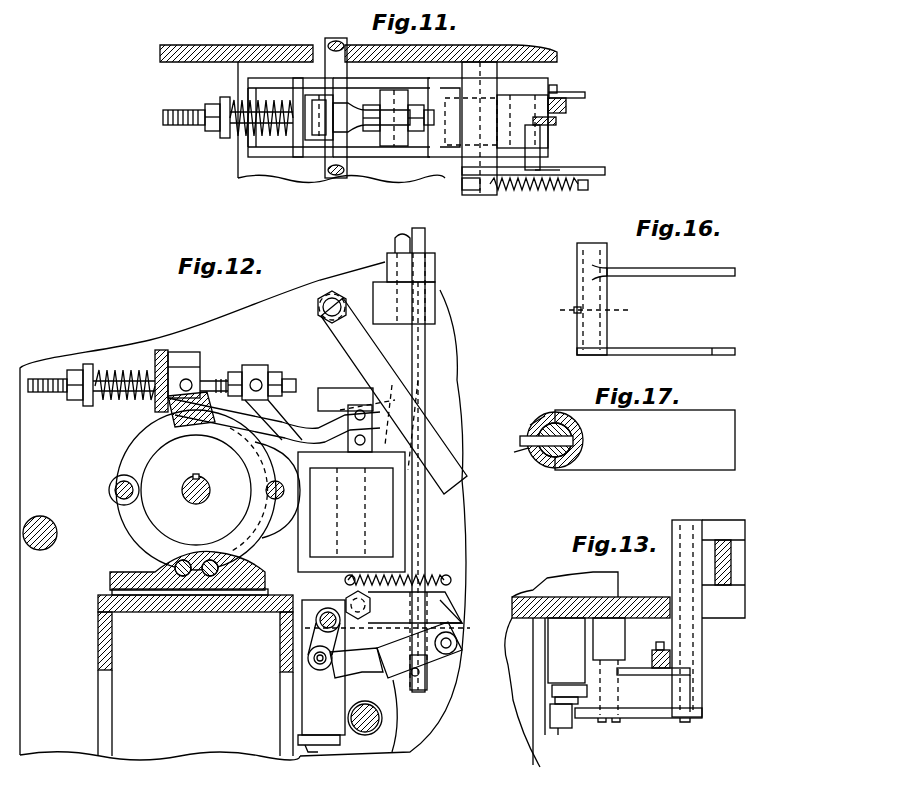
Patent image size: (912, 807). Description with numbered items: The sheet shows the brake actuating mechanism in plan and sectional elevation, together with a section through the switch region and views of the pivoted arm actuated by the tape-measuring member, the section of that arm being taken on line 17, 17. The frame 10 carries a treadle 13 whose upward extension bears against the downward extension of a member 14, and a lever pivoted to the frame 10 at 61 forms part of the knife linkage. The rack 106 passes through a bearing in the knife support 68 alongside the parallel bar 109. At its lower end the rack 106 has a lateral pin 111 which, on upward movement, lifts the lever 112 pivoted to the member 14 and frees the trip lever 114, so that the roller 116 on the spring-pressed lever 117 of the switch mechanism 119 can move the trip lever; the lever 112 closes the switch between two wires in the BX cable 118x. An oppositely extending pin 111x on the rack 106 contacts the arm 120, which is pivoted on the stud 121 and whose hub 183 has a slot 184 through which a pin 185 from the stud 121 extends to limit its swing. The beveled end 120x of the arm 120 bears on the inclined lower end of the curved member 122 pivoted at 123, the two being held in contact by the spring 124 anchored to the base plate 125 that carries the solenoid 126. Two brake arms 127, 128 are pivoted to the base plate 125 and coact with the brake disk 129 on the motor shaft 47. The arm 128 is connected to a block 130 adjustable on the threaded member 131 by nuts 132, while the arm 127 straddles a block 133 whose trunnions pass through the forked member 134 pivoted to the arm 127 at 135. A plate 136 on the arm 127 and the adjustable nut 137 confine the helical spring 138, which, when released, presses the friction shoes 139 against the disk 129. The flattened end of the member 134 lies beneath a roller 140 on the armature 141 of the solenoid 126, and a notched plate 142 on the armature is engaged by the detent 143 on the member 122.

In FIG. 12, the frame 10 is at (98, 656).
In FIG. 13, the frame 10 is at (620, 598).
In FIG. 12, the treadle 13 is at (462, 628).
In FIG. 12, the member 14 is at (462, 655).
In FIG. 13, the member 14 is at (745, 560).
In FIG. 16, the section line 17 is at (594, 311).
In FIG. 11, the shaft of electric motor 47 is at (330, 44).
In FIG. 12, the shaft of electric motor 47 is at (200, 502).
In FIG. 12, the pivot of lever 60 61 is at (40, 550).
In FIG. 12, the knife support 68 is at (436, 270).
In FIG. 11, the rack 106 is at (575, 101).
In FIG. 12, the rack 106 is at (426, 236).
In FIG. 13, the rack 106 is at (672, 660).
In FIG. 11, the parallel bar 109 is at (557, 121).
In FIG. 12, the parallel bar 109 is at (395, 246).
In FIG. 12, the lateral pin 111 is at (430, 672).
In FIG. 13, the lateral pin 111 is at (655, 676).
In FIG. 11, the oppositely extending lateral pin 111x is at (557, 88).
In FIG. 13, the oppositely extending lateral pin 111x is at (664, 644).
In FIG. 12, the lever 112 is at (410, 752).
In FIG. 13, the lever 112 is at (690, 718).
In FIG. 12, the trip lever 114 is at (353, 712).
In FIG. 13, the trip lever 114 is at (588, 722).
In FIG. 12, the roller 116 is at (312, 668).
In FIG. 13, the roller 116 is at (558, 736).
In FIG. 12, the spring-pressed lever 117 is at (310, 645).
In FIG. 13, the spring-pressed lever 117 is at (548, 698).
In FIG. 12, the BX cable 118x is at (312, 752).
In FIG. 12, the switch mechanism 119 is at (302, 722).
In FIG. 13, the switch mechanism 119 is at (545, 668).
In FIG. 12, the arm 120 is at (380, 616).
In FIG. 16, the arm 120 is at (654, 348).
In FIG. 17, the arm 120 is at (664, 470).
In FIG. 11, the beveled end 120x is at (560, 168).
In FIG. 16, the beveled end 120x is at (726, 348).
In FIG. 17, the pivot stud 121 is at (550, 413).
In FIG. 11, the curved member 122 is at (606, 170).
In FIG. 12, the curved member 122 is at (468, 482).
In FIG. 11, the pivot of curved member 123 is at (476, 190).
In FIG. 12, the pivot of curved member 123 is at (330, 290).
In FIG. 11, the spring 124 is at (540, 192).
In FIG. 12, the base plate 125 is at (110, 590).
In FIG. 11, the solenoid 126 is at (450, 88).
In FIG. 12, the solenoid 126 is at (410, 545).
In FIG. 11, the brake arm 127 is at (272, 78).
In FIG. 12, the brake arm 127 is at (118, 448).
In FIG. 11, the brake arm 128 is at (415, 78).
In FIG. 12, the brake arm 128 is at (335, 400).
In FIG. 12, the brake disk 129 is at (150, 540).
In FIG. 11, the block 130 is at (394, 146).
In FIG. 12, the block 130 is at (256, 365).
In FIG. 11, the threaded member 131 is at (165, 116).
In FIG. 12, the threaded member 131 is at (45, 378).
In FIG. 11, the nuts 132 is at (372, 131).
In FIG. 12, the nuts 132 is at (236, 372).
In FIG. 11, the block 133 is at (318, 140).
In FIG. 12, the block 133 is at (186, 366).
In FIG. 11, the forked member 134 is at (442, 131).
In FIG. 12, the forked member 134 is at (230, 430).
In FIG. 12, the pivot of forked member 135 is at (178, 428).
In FIG. 11, the plate 136 is at (297, 140).
In FIG. 12, the plate 136 is at (162, 350).
In FIG. 11, the adjustable nut 137 is at (210, 126).
In FIG. 12, the adjustable nut 137 is at (76, 402).
In FIG. 11, the helical spring 138 is at (232, 102).
In FIG. 12, the helical spring 138 is at (120, 368).
In FIG. 11, the friction pad or shoe 139 is at (254, 142).
In FIG. 12, the friction pad or shoe 139 is at (116, 500).
In FIG. 11, the roller 140 is at (500, 115).
In FIG. 12, the roller 140 is at (356, 404).
In FIG. 12, the armature 141 is at (351, 512).
In FIG. 11, the notched plate 142 is at (540, 95).
In FIG. 12, the notched plate 142 is at (430, 430).
In FIG. 11, the detent 143 is at (540, 148).
In FIG. 12, the detent 143 is at (430, 400).
In FIG. 16, the hub 183 is at (577, 334).
In FIG. 17, the hub 183 is at (545, 468).
In FIG. 17, the slot 184 is at (522, 436).
In FIG. 16, the pin 185 is at (575, 308).
In FIG. 17, the pin 185 is at (520, 452).